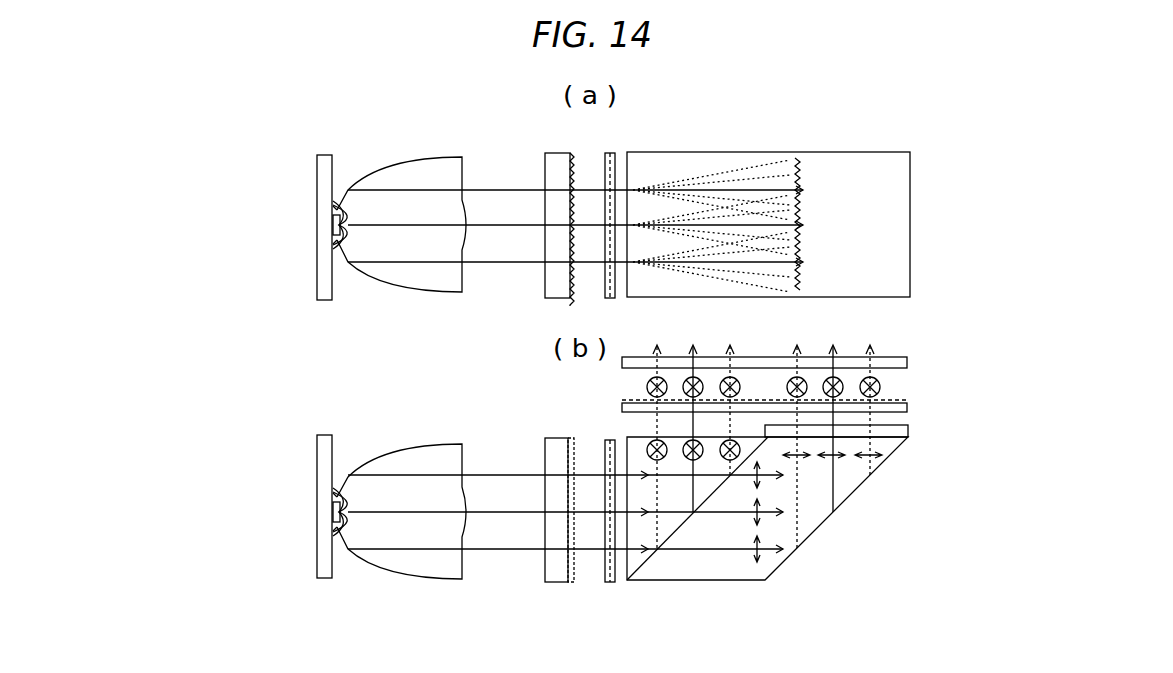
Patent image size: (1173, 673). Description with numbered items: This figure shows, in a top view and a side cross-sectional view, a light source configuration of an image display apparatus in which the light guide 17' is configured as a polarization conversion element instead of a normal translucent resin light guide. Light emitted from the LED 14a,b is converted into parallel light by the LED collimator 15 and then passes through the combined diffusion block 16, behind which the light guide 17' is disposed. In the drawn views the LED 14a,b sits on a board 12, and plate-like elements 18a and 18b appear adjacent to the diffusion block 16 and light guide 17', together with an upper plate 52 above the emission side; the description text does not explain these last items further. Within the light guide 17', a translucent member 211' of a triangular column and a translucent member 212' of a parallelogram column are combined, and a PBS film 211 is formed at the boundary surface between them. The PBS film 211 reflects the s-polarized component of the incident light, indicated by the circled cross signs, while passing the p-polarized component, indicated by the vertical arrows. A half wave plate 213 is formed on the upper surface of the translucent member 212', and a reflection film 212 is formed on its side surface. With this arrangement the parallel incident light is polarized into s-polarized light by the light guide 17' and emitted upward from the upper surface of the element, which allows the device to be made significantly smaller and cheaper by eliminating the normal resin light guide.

The substrate 12 is at (325, 172).
The LED 14a,b is at (335, 223).
The LED collimator 15 is at (405, 288).
The combined diffusion block 16 is at (550, 282).
The light guide 17' is at (781, 346).
The polarization conversion element 18a is at (612, 298).
The polarization conversion element 18b is at (622, 402).
The reflection plate 52 is at (620, 363).
The PBS film 211 is at (763, 486).
The translucent member of a triangular column 211' is at (685, 541).
The reflection film 212 is at (763, 508).
The translucent member of a parallelogram column 212' is at (825, 529).
The half wave plate 213 is at (910, 431).